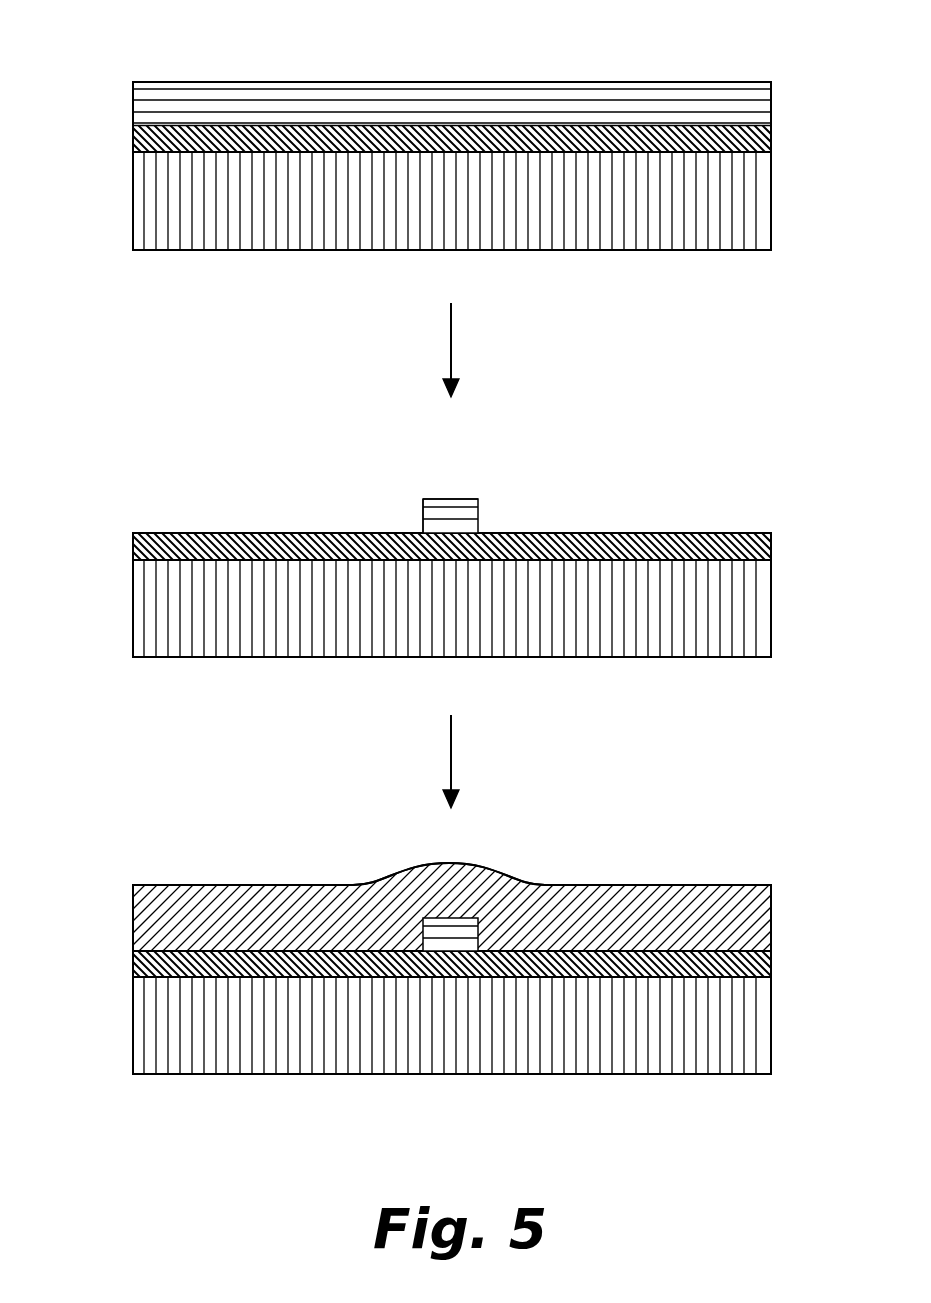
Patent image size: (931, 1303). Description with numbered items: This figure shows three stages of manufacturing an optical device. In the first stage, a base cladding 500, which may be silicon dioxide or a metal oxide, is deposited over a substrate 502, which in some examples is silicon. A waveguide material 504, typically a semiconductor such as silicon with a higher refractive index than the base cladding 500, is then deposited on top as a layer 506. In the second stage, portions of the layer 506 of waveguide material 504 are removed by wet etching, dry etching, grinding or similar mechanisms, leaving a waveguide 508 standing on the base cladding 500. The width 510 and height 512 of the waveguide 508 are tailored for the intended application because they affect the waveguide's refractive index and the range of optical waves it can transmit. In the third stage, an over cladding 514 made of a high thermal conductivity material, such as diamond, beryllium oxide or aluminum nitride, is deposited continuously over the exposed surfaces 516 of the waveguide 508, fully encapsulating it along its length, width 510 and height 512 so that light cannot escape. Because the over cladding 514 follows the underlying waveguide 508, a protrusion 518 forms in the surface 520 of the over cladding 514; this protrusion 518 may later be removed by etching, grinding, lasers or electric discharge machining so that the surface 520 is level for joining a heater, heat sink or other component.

The base cladding 500 is at (148, 146).
The substrate 502 is at (172, 212).
The waveguide material 504 is at (178, 108).
The layer 506 is at (210, 72).
The waveguide 508 is at (412, 497).
The width 510 is at (478, 498).
The height 512 is at (410, 500).
The over cladding 514 is at (258, 893).
The exposed surfaces 516 is at (421, 922).
The protrusion 518 is at (523, 860).
The surface 520 is at (598, 886).